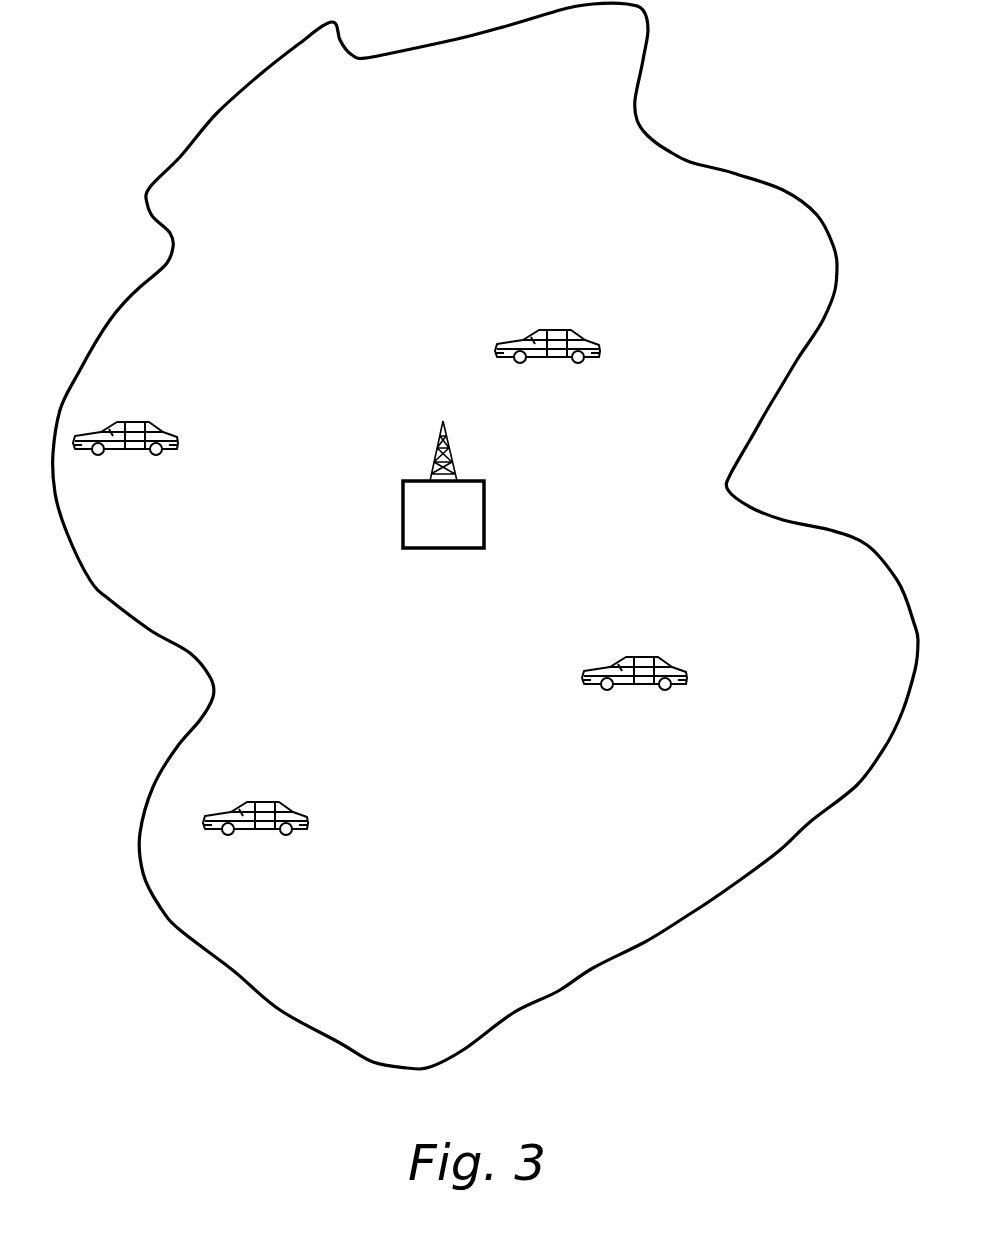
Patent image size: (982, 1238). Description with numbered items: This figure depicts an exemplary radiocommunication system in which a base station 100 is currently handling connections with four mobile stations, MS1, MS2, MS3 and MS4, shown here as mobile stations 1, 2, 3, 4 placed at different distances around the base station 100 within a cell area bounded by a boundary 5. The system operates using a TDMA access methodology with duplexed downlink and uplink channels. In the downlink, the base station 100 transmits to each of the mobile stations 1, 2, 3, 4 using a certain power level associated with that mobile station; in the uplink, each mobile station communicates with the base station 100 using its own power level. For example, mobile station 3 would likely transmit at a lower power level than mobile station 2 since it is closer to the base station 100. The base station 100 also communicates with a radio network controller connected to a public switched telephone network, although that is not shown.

The cell coverage area boundary 5 is at (781, 853).
The base station 100 is at (486, 516).
The mobile station 1 is at (645, 658).
The mobile station 2 is at (270, 803).
The mobile station 3 is at (556, 331).
The mobile station 4 is at (138, 423).